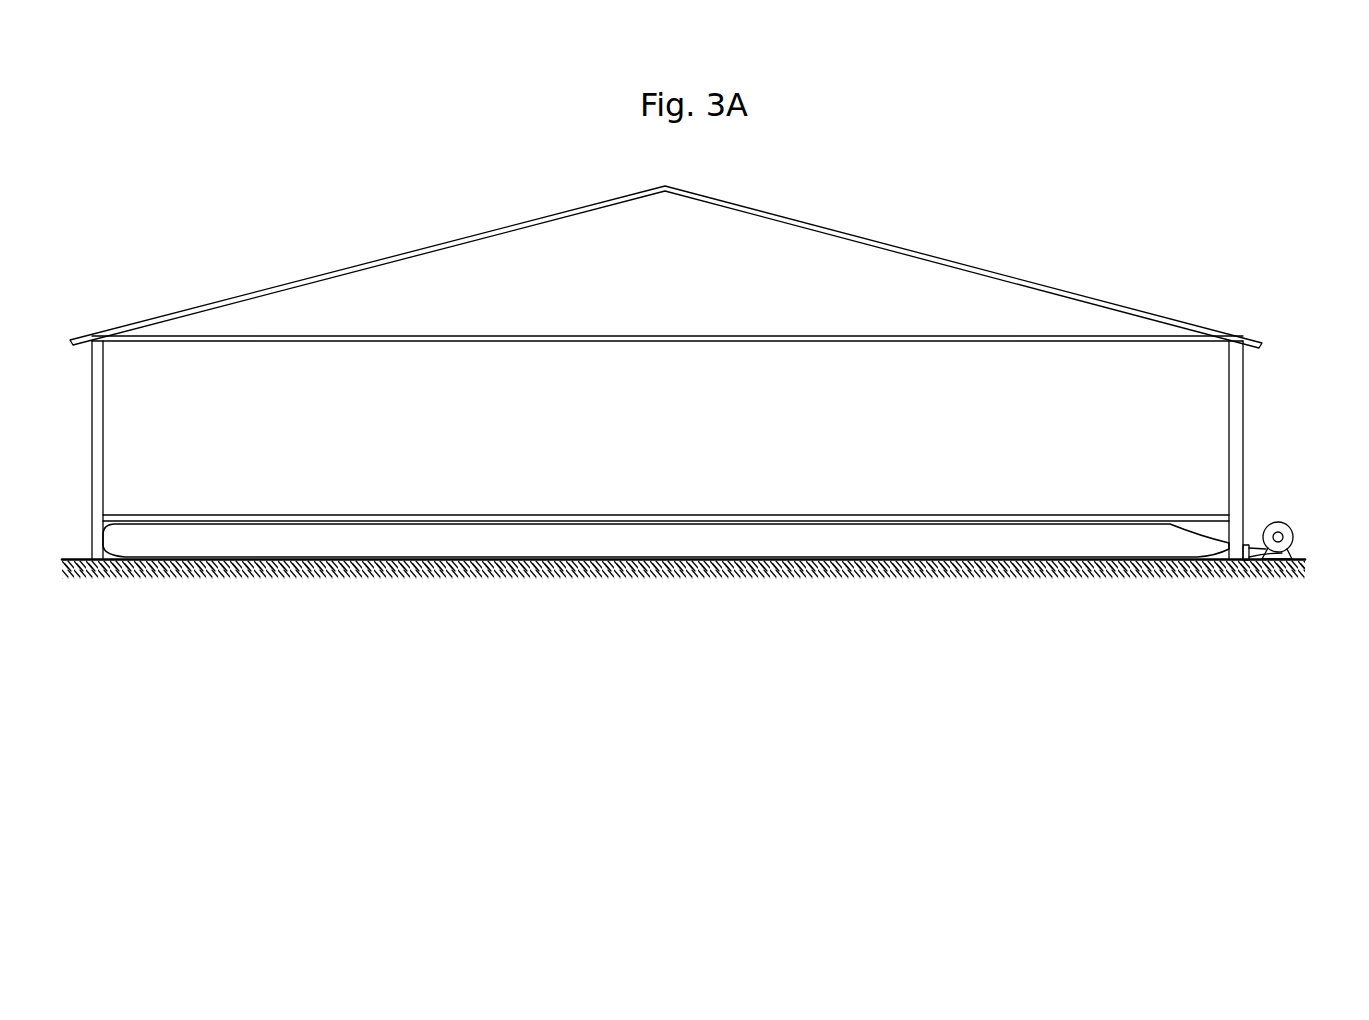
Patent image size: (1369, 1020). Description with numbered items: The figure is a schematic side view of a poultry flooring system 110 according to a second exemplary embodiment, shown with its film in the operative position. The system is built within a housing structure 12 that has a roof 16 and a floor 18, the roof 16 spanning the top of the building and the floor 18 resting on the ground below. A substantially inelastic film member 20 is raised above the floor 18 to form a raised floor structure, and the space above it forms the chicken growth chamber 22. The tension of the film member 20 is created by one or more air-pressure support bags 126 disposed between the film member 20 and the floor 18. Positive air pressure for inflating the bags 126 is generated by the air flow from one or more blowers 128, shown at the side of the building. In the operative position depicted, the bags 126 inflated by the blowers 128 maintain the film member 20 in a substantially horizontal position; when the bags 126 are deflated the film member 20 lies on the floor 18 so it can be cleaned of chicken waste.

The poultry flooring system 110 is at (608, 607).
The housing structure 12 is at (960, 266).
The roof 16 is at (420, 252).
The chicken growth chamber 22 is at (655, 426).
The inelastic film member 20 is at (810, 515).
The floor 18 is at (298, 552).
The air-pressure support bags 126 is at (940, 547).
The blowers 128 is at (1292, 523).